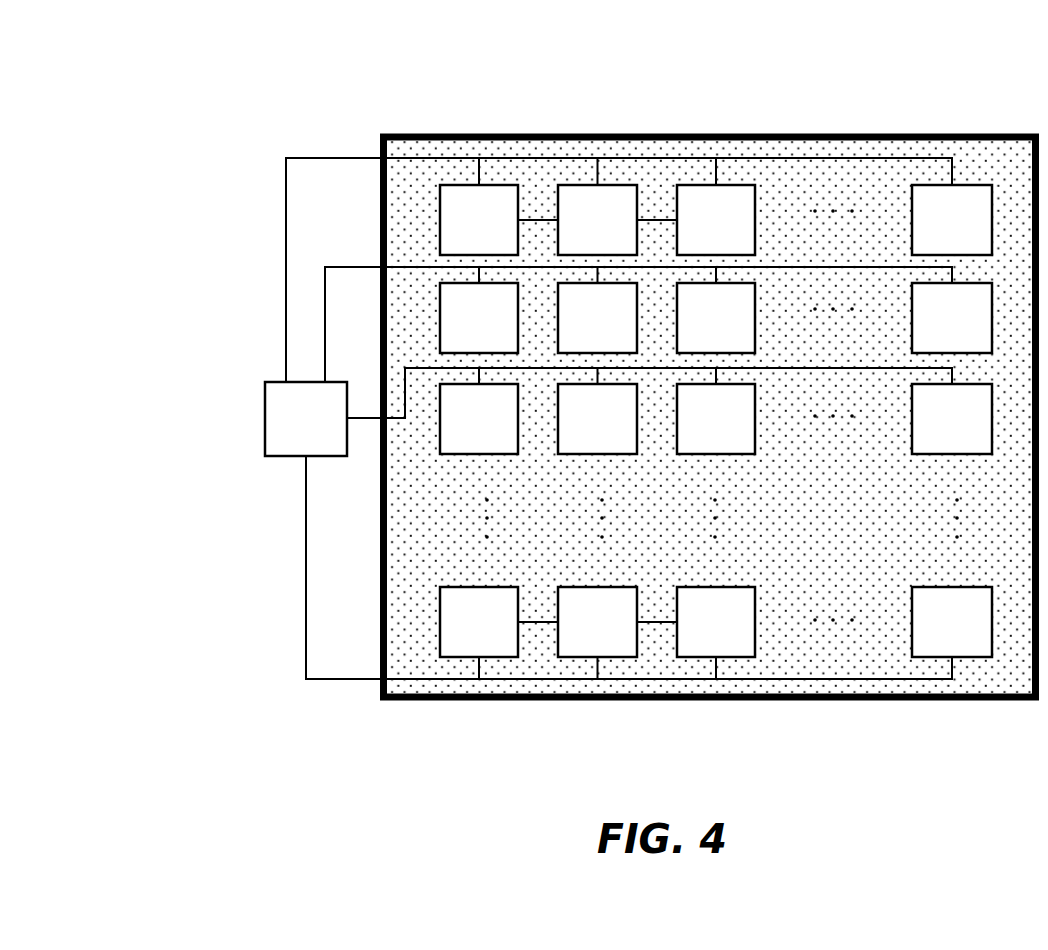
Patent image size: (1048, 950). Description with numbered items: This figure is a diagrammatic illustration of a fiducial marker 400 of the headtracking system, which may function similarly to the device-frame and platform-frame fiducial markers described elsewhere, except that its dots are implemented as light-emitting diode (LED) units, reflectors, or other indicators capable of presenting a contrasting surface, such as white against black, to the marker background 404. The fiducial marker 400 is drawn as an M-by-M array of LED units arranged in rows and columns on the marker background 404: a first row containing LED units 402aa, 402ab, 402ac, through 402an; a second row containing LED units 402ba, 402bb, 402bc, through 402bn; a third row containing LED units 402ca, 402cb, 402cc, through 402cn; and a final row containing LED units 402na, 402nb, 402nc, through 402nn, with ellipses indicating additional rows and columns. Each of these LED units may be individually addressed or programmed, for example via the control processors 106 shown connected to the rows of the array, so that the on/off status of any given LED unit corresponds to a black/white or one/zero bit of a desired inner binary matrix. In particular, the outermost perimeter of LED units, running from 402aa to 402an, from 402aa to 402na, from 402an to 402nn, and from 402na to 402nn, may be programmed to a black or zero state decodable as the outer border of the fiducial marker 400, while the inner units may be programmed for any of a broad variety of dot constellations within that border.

The fiducial marker 400 is at (189, 74).
The control processors 106 is at (284, 436).
The marker background 404 is at (814, 527).
The light-emitting diode unit 402aa is at (511, 234).
The light-emitting diode unit 402ab is at (566, 234).
The light-emitting diode unit 402ac is at (748, 234).
The light-emitting diode unit 402an is at (984, 234).
The light-emitting diode unit 402ba is at (511, 332).
The light-emitting diode unit 402bb is at (566, 332).
The light-emitting diode unit 402bc is at (748, 332).
The light-emitting diode unit 402bn is at (984, 332).
The light-emitting diode unit 402ca is at (511, 433).
The light-emitting diode unit 402cb is at (566, 433).
The light-emitting diode unit 402cc is at (748, 433).
The light-emitting diode unit 402cn is at (984, 433).
The light-emitting diode unit 402na is at (511, 636).
The light-emitting diode unit 402nb is at (566, 636).
The light-emitting diode unit 402nc is at (748, 636).
The light-emitting diode unit 402nn is at (984, 636).